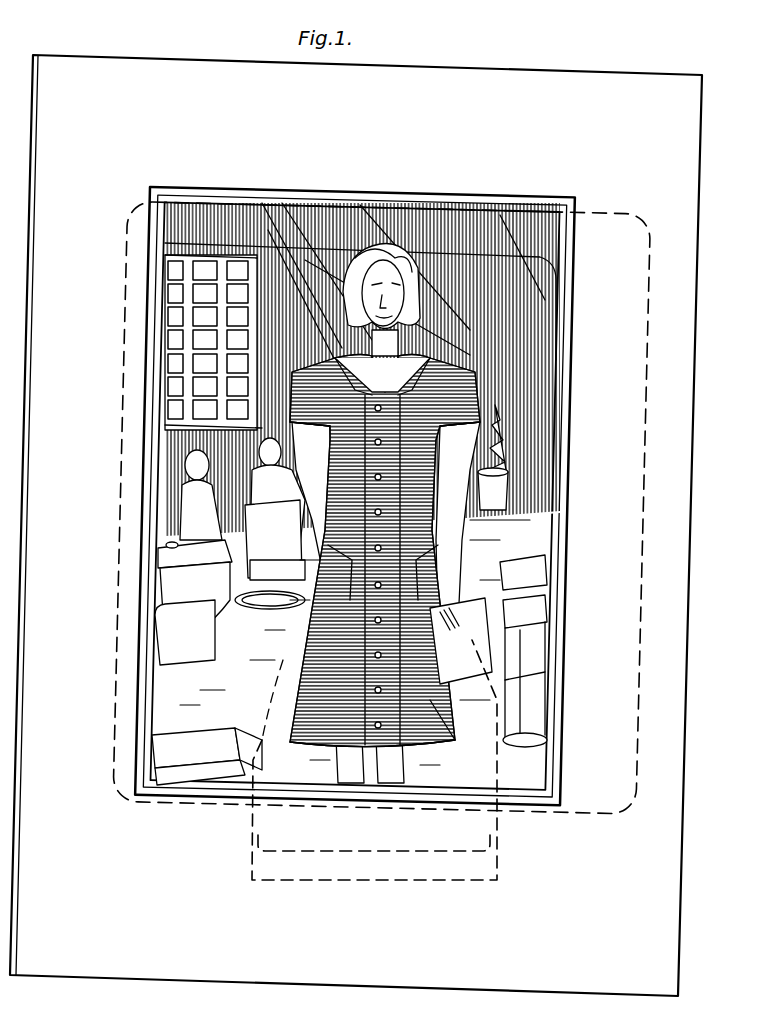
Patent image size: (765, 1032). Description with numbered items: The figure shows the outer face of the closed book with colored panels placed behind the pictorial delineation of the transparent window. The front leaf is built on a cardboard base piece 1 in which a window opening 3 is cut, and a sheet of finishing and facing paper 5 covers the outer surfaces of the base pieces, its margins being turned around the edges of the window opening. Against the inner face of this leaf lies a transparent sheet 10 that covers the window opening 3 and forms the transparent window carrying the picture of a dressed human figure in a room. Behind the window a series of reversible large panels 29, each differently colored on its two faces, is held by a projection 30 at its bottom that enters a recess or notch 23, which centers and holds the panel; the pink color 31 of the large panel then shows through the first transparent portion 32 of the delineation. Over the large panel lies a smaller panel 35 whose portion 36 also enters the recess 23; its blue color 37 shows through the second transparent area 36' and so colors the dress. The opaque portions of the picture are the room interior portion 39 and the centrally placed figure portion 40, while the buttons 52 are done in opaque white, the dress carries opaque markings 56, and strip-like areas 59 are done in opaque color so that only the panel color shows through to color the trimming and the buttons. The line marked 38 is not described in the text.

The base piece for the front leaf 1 is at (398, 526).
The window opening 3 is at (515, 333).
The sheet of finishing and facing paper 5 is at (393, 507).
The transparent sheet 10 is at (380, 224).
The recess or notch 23 is at (252, 862).
The large panel 29 is at (648, 516).
The projection 30 is at (490, 836).
The pink color of the panel 31 is at (430, 228).
The first transparent portion 32 is at (298, 262).
The smaller panel 35 is at (240, 800).
The portion of the smaller panel 36 is at (336, 779).
The second transparent area 36' is at (249, 700).
The blue color 37 is at (428, 736).
The ray 38 is at (335, 365).
The opaque portion of the pictorial delineation 39 is at (195, 497).
The opaque portion of the pictorial delineation 40 is at (398, 305).
The buttons 52 is at (330, 725).
The opaque markings of the dress 56 is at (470, 416).
The strip-like areas 59 is at (430, 452).